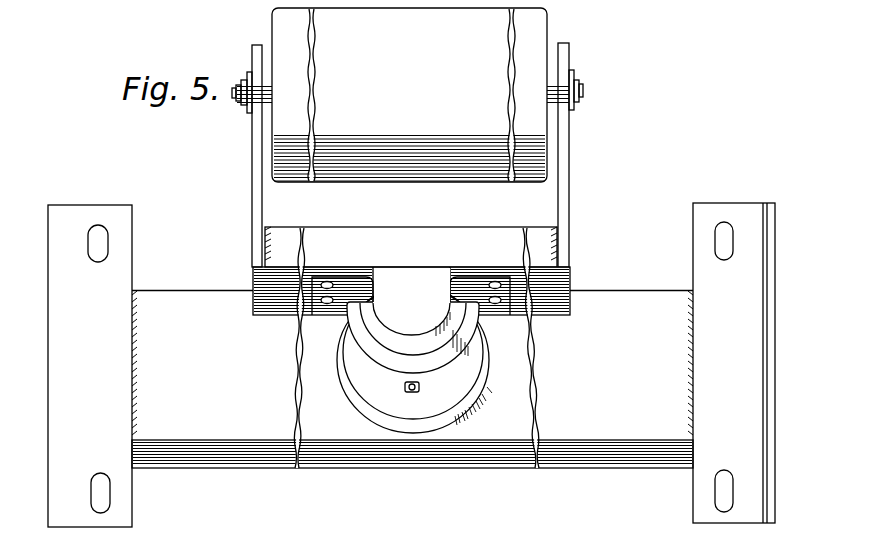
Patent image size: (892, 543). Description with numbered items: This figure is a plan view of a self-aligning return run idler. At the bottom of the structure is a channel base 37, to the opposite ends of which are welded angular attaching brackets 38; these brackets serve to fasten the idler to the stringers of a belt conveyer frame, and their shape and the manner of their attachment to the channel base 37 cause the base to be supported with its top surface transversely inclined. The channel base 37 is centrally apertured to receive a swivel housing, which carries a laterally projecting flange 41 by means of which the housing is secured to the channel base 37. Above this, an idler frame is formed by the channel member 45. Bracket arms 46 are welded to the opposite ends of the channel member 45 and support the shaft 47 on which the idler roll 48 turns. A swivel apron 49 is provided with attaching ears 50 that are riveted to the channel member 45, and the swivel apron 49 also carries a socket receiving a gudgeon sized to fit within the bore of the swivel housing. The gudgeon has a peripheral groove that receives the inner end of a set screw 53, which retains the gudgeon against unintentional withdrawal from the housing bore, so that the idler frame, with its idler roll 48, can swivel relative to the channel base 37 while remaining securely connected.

The channel base 37 is at (607, 456).
The angular attaching brackets 38 is at (411, 365).
The laterally projecting flange 41 is at (478, 396).
The channel member 45 is at (411, 240).
The bracket arms 46 is at (253, 206).
The shaft 47 is at (585, 94).
The idler roll 48 is at (412, 24).
The swivel apron 49 is at (411, 291).
The attaching ears 50 is at (323, 315).
The set screw 53 is at (404, 389).